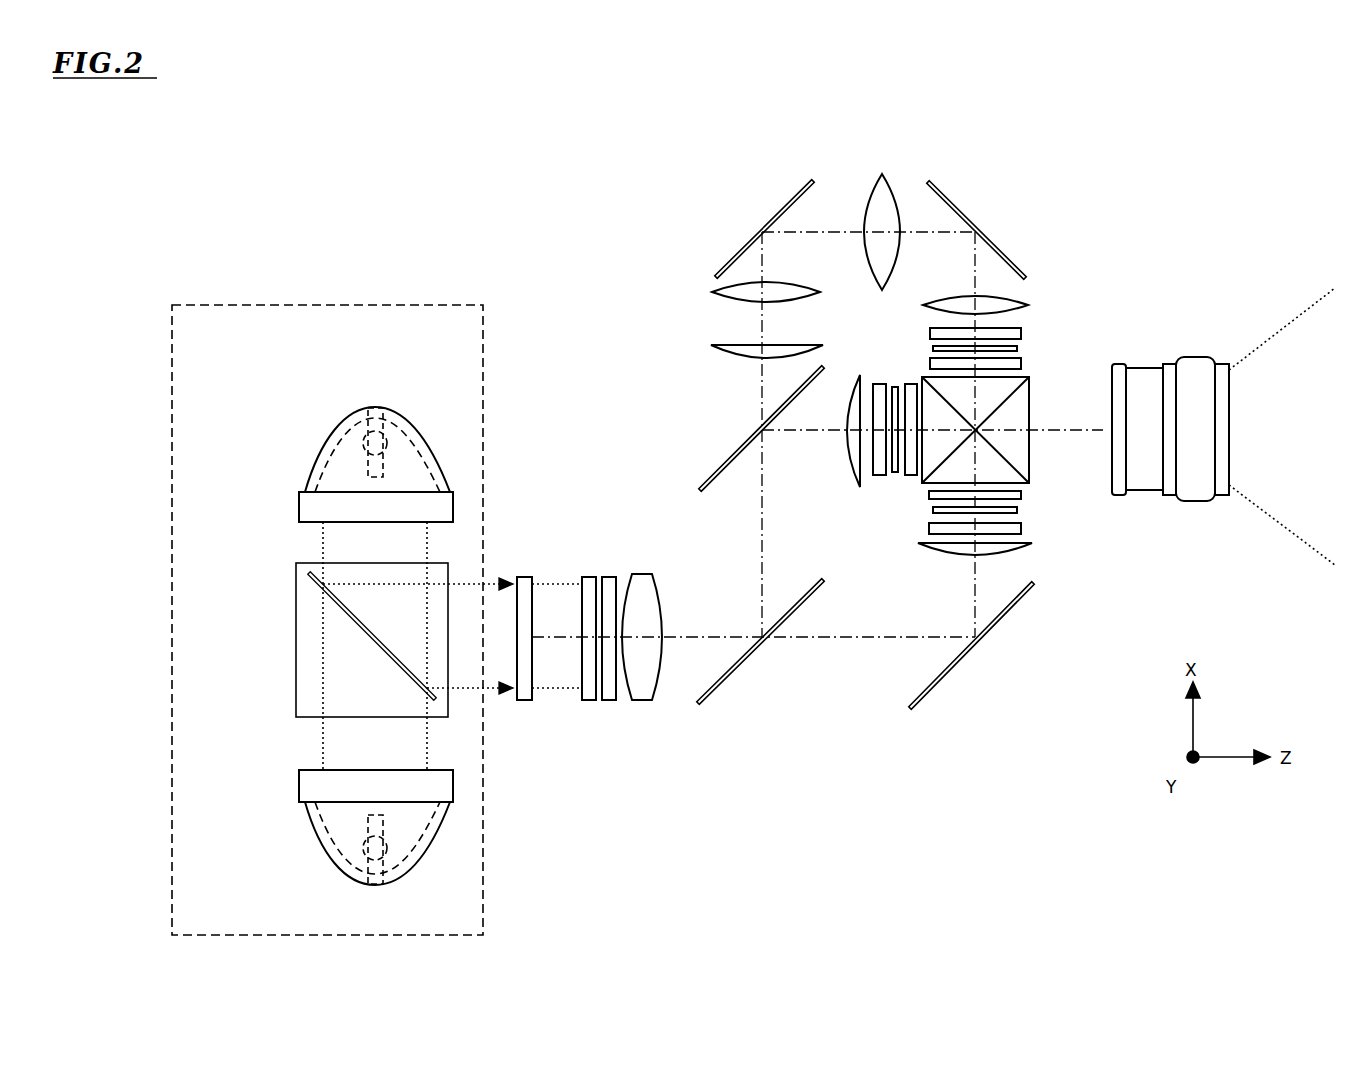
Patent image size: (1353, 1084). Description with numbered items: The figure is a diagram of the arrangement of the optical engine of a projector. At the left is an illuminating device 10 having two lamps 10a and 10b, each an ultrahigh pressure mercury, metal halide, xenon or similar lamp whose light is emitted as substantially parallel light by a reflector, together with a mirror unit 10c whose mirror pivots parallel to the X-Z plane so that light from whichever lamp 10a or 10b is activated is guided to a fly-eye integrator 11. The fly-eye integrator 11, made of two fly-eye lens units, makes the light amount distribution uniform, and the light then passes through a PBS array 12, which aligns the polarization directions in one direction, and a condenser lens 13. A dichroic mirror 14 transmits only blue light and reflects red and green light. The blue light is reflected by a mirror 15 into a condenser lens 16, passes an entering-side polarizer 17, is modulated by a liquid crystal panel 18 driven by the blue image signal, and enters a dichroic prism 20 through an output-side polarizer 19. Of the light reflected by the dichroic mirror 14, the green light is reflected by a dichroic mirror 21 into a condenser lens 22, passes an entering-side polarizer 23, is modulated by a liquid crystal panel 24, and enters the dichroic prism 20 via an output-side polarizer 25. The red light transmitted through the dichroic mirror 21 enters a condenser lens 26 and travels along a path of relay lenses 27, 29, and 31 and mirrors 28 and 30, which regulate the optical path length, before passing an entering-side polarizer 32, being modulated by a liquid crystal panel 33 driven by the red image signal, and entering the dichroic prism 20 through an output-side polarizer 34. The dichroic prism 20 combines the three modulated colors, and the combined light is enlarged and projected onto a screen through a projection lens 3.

The projection lens 3 is at (1157, 357).
The illuminating device 10 is at (263, 302).
The lamp 10a is at (325, 433).
The lamp 10b is at (327, 833).
The mirror unit 10c is at (305, 558).
The fly-eye integrator 11 is at (596, 566).
The PBS array 12 is at (608, 705).
The condenser lens 13 is at (643, 704).
The dichroic mirror 14 is at (738, 667).
The mirror 15 is at (957, 666).
The condenser lens 16 is at (1033, 547).
The entering-side polarizer 17 is at (1022, 525).
The liquid crystal panel 18 is at (1018, 510).
The output-side polarizer 19 is at (1022, 495).
The dichroic prism 20 is at (1022, 415).
The dichroic mirror 21 is at (722, 467).
The condenser lens 22 is at (848, 465).
The entering-side polarizer 23 is at (879, 383).
The liquid crystal panel 24 is at (895, 475).
The output-side polarizer 25 is at (908, 383).
The condenser lens 26 is at (725, 342).
The relay lens 27 is at (722, 290).
The mirror 28 is at (768, 218).
The relay lens 29 is at (883, 188).
The mirror 30 is at (963, 208).
The relay lens 31 is at (957, 293).
The entering-side polarizer 32 is at (1022, 333).
The liquid crystal panel 33 is at (1018, 348).
The output-side polarizer 34 is at (1023, 363).